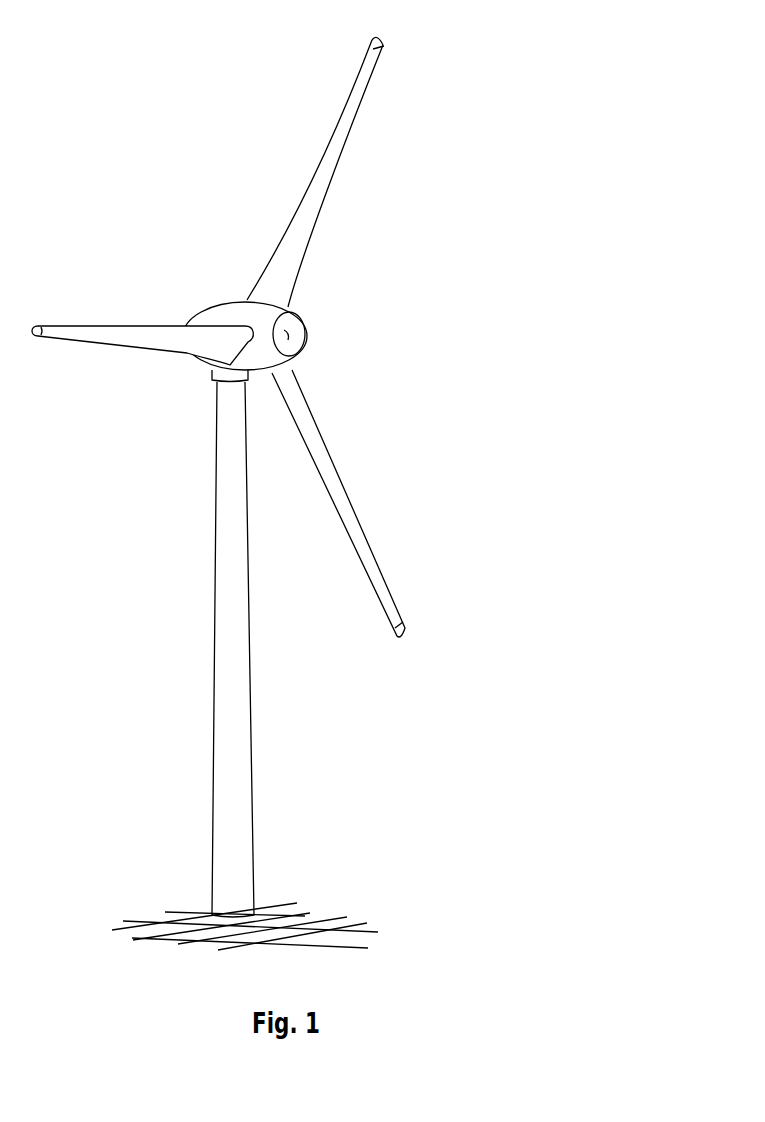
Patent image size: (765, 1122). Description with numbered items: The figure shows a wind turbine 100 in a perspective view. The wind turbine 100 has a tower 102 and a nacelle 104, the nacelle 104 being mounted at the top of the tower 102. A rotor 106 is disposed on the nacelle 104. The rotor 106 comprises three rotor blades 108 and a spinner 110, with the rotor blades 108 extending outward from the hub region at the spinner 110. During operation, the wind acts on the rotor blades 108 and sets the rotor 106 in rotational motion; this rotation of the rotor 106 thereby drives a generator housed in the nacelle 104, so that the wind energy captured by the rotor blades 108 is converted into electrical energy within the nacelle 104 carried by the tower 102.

The wind turbine 100 is at (270, 474).
The tower 102 is at (237, 732).
The nacelle 104 is at (227, 310).
The rotor 106 is at (270, 334).
The rotor blades 108 is at (340, 138).
The spinner 110 is at (342, 338).